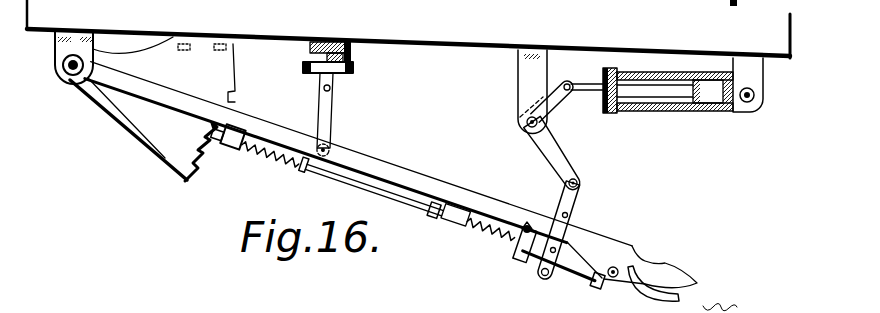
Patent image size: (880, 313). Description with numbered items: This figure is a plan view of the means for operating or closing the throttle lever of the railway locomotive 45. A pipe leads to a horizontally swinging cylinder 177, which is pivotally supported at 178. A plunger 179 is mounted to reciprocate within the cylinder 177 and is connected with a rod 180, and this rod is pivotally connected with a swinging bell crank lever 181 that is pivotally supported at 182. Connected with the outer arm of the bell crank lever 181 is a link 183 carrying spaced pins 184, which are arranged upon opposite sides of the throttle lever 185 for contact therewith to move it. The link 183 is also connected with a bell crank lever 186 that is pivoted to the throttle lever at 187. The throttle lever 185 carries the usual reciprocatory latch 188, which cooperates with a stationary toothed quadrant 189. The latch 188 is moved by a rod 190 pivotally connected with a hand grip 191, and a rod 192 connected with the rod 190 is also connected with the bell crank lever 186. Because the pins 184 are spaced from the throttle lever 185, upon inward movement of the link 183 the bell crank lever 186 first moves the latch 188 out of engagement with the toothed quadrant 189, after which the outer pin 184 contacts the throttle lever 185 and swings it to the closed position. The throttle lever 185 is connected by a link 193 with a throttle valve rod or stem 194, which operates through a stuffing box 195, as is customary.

The railway locomotive 45 is at (487, 45).
The horizontally swinging cylinder 177 is at (717, 109).
The pivotal support 178 is at (757, 113).
The plunger 179 is at (680, 104).
The rod 180 is at (643, 92).
The swinging bell crank lever 181 is at (550, 158).
The pivotal support 182 is at (527, 122).
The link 183 is at (580, 205).
The spaced pins 184 is at (573, 240).
The throttle lever 185 is at (413, 180).
The bell crank lever 186 is at (533, 263).
The pivot 187 is at (526, 224).
The reciprocatory latch 188 is at (245, 152).
The stationary toothed quadrant 189 is at (167, 152).
The rod 190 is at (357, 181).
The hand grip 191 is at (650, 297).
The rod 192 is at (473, 238).
The link 193 is at (333, 115).
The throttle valve rod or stem 194 is at (333, 81).
The stuffing box 195 is at (353, 62).